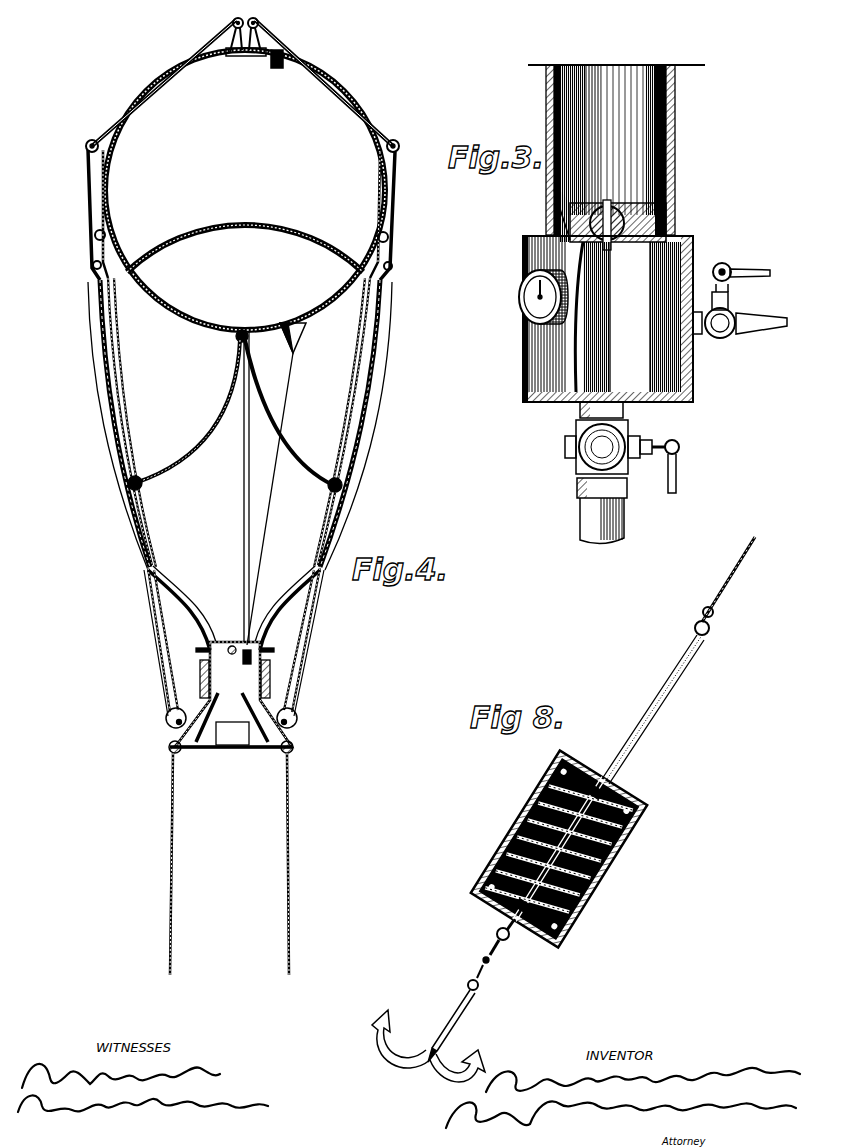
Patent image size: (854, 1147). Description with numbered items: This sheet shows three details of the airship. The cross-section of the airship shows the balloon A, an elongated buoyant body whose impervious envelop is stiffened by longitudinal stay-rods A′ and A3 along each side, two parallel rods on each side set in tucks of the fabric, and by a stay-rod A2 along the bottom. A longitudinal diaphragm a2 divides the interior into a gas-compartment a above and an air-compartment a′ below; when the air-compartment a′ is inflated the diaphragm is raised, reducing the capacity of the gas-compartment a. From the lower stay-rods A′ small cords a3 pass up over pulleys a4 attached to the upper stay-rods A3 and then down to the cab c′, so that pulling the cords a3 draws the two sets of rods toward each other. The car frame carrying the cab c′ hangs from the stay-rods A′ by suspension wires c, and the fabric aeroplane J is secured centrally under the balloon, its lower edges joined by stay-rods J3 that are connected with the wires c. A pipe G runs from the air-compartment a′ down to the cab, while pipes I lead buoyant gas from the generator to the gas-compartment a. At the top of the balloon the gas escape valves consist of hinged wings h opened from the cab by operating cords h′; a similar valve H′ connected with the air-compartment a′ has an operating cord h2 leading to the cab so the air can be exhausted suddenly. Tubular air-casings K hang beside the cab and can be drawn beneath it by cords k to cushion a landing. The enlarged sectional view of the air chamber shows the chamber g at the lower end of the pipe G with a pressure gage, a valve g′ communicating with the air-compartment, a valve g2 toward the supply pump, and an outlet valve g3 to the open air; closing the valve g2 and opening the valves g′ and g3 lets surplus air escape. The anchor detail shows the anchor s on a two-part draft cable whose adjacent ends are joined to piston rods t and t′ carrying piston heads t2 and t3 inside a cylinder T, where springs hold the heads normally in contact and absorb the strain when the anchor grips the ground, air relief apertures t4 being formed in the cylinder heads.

In FIG. 4, the balloon A is at (160, 98).
In FIG. 4, the gas-compartment a is at (240, 161).
In FIG. 4, the diaphragm a2 is at (238, 226).
In FIG. 4, the air-compartment a′ is at (243, 285).
In FIG. 4, the operating cords h′ is at (208, 45).
In FIG. 4, the wings h is at (232, 58).
In FIG. 4, the pulleys a4 is at (402, 136).
In FIG. 4, the stay-rods A3 is at (108, 165).
In FIG. 4, the stay-rods A′ is at (104, 232).
In FIG. 4, the cords a3 is at (380, 432).
In FIG. 4, the pipes I is at (98, 388).
In FIG. 4, the suspension wires or ropes c is at (150, 615).
In FIG. 4, the cab c′ is at (222, 642).
In FIG. 4, the cords k is at (196, 686).
In FIG. 4, the tubular air-casings K is at (164, 720).
In FIG. 4, the pipe G is at (246, 492).
In FIG. 3, the pipe G is at (676, 122).
In FIG. 4, the stay-rod A2 is at (236, 342).
In FIG. 4, the valve H′ is at (310, 324).
In FIG. 4, the operating cord h2 is at (282, 398).
In FIG. 4, the aeroplane J is at (234, 412).
In FIG. 4, the stay-rods J3 is at (140, 478).
In FIG. 3, the chamber g is at (524, 352).
In FIG. 3, the valve g′ is at (626, 205).
In FIG. 3, the valve g2 is at (577, 460).
In FIG. 3, the outlet valve g3 is at (725, 338).
In FIG. 8, the piston rod t is at (676, 668).
In FIG. 8, the cylinder T is at (618, 798).
In FIG. 8, the piston head t2 is at (612, 862).
In FIG. 8, the piston head t3 is at (604, 880).
In FIG. 8, the air relief apertures t4 is at (600, 770).
In FIG. 8, the piston rod t′ is at (512, 938).
In FIG. 8, the anchor s is at (464, 1018).